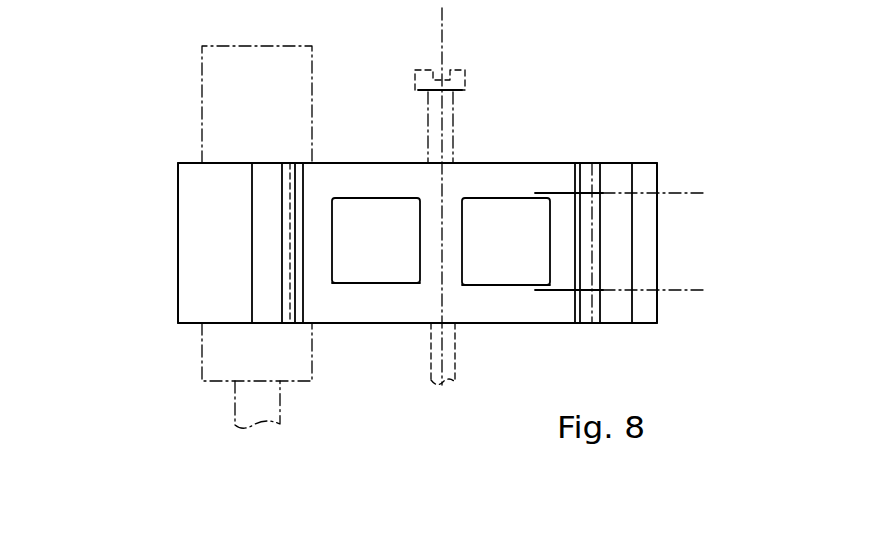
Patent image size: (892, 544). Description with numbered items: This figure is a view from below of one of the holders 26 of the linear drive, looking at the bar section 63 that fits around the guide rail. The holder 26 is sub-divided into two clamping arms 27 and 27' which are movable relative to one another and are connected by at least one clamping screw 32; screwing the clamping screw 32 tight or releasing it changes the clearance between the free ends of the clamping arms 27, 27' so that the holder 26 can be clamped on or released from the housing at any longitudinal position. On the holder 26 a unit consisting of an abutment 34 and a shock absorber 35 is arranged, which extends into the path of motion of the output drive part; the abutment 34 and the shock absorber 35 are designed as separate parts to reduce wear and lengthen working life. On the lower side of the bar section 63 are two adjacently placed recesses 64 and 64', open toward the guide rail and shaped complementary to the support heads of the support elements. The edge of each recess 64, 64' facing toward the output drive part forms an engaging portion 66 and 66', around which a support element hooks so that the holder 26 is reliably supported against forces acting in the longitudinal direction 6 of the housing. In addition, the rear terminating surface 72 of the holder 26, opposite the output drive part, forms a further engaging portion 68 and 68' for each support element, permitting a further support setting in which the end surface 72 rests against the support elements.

The longitudinal direction 6 is at (445, 25).
The holder 26 is at (570, 170).
The clamping arm 27 is at (694, 243).
The clamping arm 27' is at (141, 243).
The clamping screw 32 is at (698, 193).
The abutment 34 is at (445, 110).
The shock absorber 35 is at (200, 92).
The bar section 63 is at (398, 313).
The recess 64 is at (376, 186).
The recess 64' is at (510, 170).
The engaging portion 66 is at (376, 318).
The engaging portion 66' is at (506, 318).
The further engaging portion 68 is at (382, 105).
The further engaging portion 68' is at (532, 93).
The rear terminating surface 72 is at (302, 160).